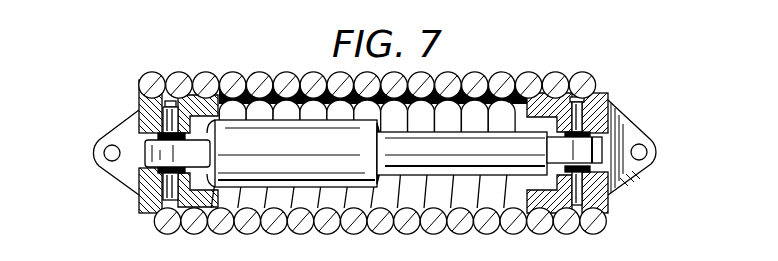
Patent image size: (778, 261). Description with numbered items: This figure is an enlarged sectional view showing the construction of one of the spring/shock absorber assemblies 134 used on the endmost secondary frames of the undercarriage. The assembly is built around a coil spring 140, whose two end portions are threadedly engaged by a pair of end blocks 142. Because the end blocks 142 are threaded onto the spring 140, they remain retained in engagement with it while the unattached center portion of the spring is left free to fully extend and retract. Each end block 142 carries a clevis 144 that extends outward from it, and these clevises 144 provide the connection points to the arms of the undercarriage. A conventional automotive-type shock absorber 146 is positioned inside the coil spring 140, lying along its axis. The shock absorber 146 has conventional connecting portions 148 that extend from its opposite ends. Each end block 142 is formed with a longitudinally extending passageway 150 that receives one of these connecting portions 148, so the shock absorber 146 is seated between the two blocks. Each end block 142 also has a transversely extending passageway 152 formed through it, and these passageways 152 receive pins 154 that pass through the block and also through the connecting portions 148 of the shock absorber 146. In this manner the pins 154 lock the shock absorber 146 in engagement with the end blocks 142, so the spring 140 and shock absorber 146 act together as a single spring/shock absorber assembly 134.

The spring/shock absorber assembly 134 is at (206, 70).
The coil spring 140 is at (301, 70).
The end block 142 is at (147, 212).
The clevis 144 is at (114, 133).
The shock absorber 146 is at (386, 176).
The connecting portion 148 is at (149, 156).
The longitudinally extending passageway 150 is at (140, 188).
The transversely extending passageway 152 is at (173, 213).
The pin 154 is at (160, 116).